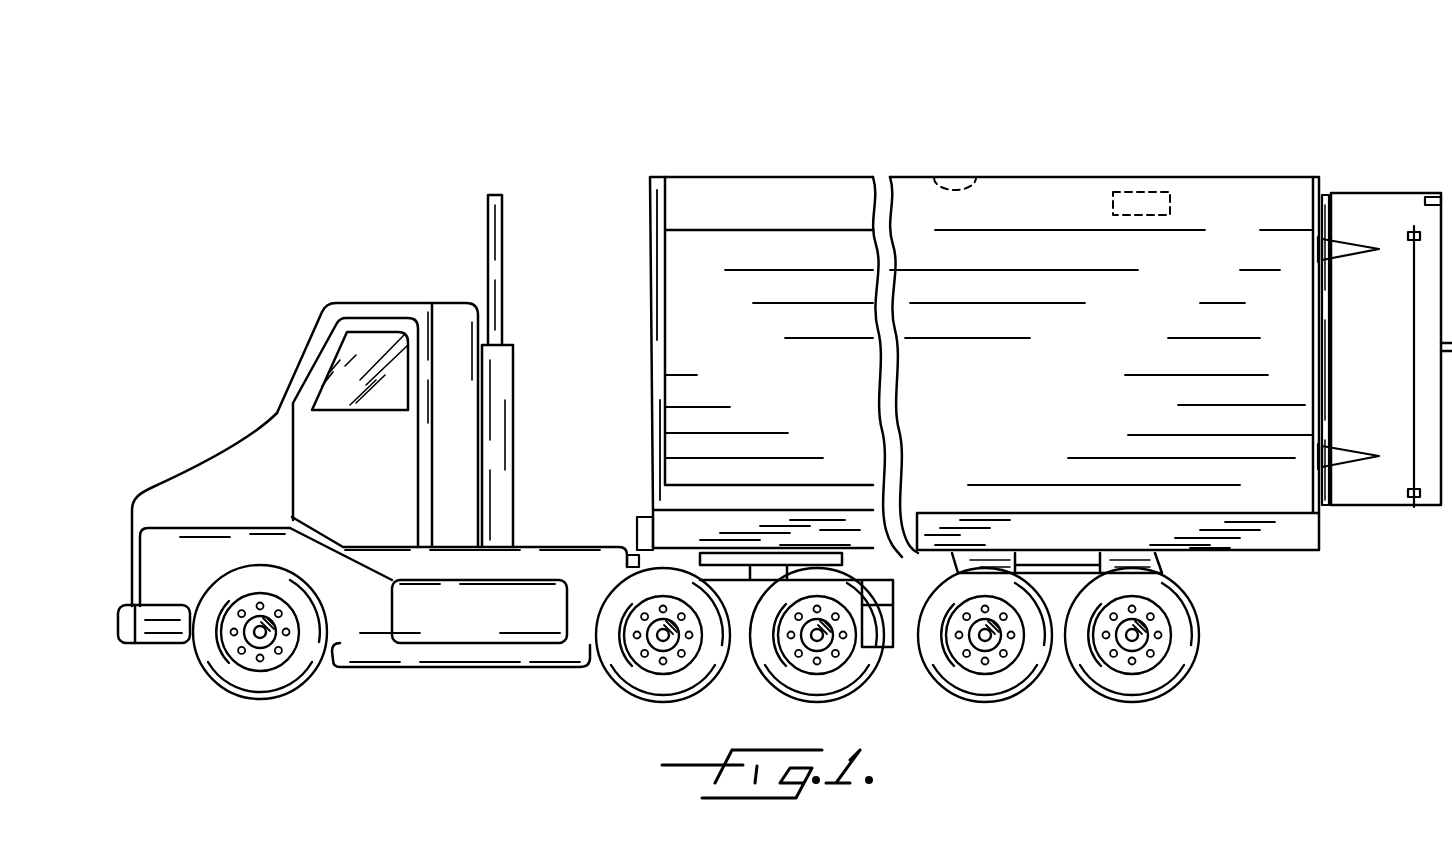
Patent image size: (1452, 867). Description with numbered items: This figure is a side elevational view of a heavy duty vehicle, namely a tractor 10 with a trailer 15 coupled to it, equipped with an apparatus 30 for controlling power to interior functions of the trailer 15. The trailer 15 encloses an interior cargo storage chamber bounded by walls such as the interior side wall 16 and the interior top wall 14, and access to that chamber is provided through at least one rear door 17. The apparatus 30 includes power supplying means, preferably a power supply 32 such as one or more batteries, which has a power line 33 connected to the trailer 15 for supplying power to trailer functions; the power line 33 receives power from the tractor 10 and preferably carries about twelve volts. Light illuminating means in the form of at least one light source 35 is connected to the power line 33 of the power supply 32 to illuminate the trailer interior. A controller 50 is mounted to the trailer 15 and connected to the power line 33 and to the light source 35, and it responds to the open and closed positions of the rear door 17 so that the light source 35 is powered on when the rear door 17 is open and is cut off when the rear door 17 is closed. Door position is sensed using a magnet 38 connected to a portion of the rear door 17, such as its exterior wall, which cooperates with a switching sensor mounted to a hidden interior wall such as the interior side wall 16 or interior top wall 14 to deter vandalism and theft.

The tractor 10 is at (396, 300).
The interior top wall 14 is at (1241, 176).
The trailer 15 is at (775, 172).
The interior side wall 16 is at (1062, 398).
The rear door 17 is at (1341, 193).
The apparatus 30 is at (1364, 51).
The power supply 32 is at (240, 524).
The power line 33 is at (640, 530).
The light source 35 is at (967, 178).
The magnet 38 is at (1431, 197).
The controller 50 is at (1155, 192).